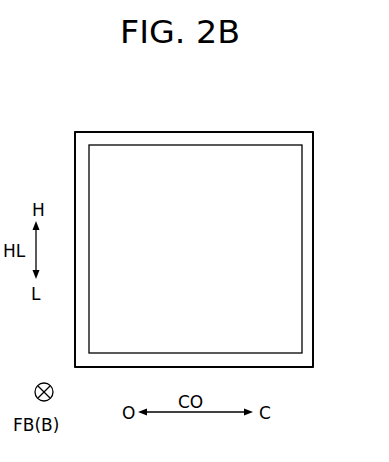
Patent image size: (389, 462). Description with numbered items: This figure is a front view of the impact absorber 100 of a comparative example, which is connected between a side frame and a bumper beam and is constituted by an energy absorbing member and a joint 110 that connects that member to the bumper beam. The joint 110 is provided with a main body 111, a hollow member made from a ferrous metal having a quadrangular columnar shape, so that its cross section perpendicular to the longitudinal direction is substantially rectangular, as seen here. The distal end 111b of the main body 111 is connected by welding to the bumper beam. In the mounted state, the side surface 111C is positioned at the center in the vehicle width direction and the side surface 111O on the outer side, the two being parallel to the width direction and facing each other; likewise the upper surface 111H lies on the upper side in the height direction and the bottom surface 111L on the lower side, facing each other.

The impact absorber 100 is at (62, 116).
The joint 110 is at (145, 110).
The main body 111 is at (194, 226).
The distal end 111b is at (263, 132).
The upper surface 111H is at (182, 129).
The side surface 111O is at (78, 247).
The side surface 111C is at (310, 248).
The bottom surface 111L is at (186, 365).